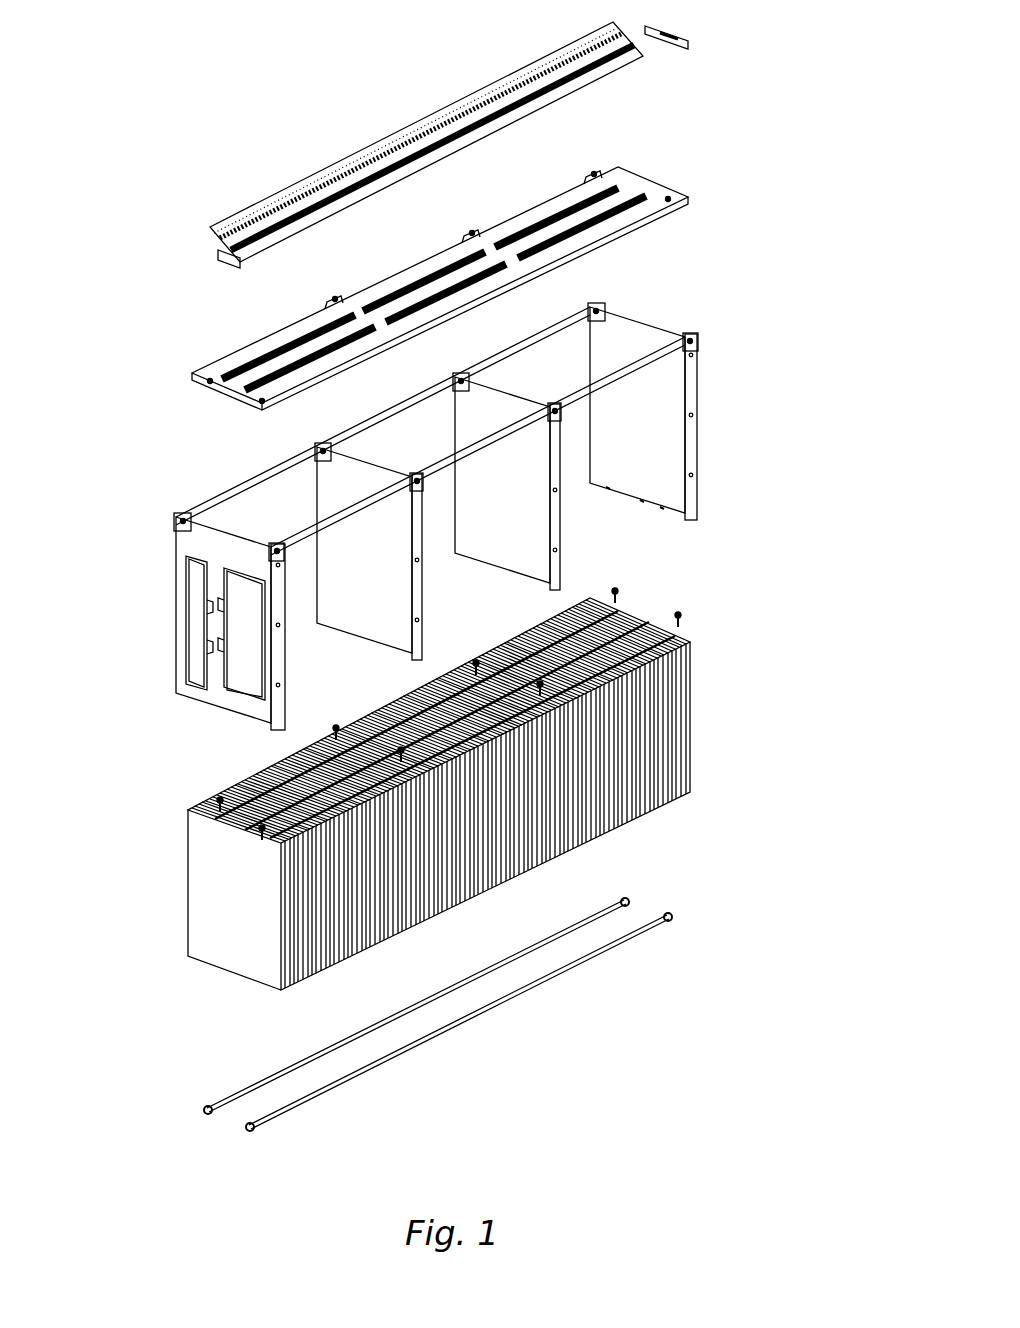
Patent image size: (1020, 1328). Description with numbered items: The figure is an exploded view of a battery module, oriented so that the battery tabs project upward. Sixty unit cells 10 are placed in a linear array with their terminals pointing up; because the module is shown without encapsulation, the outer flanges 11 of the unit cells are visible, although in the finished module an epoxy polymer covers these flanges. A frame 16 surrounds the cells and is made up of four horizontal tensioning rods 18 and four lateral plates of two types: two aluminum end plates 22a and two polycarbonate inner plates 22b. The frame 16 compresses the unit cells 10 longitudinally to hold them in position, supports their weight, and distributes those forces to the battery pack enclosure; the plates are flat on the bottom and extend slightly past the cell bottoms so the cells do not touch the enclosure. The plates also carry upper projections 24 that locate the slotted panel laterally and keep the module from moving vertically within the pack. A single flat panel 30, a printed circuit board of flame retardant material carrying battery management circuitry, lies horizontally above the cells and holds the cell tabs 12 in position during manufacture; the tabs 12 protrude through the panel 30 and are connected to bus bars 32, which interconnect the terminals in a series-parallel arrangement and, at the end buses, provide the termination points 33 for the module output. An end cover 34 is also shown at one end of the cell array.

The unit cells 10 is at (443, 778).
The outer flanges 11 is at (655, 767).
The cell tabs 12 is at (643, 615).
The frame 16 is at (443, 501).
The horizontal tensioning rods 18 is at (337, 527).
The aluminum end plates 22a is at (667, 462).
The polycarbonate inner plates 22b is at (512, 552).
The upper projections 24 is at (687, 333).
The flat panel 30 is at (658, 193).
The bus bars 32 is at (398, 140).
The termination points 33 is at (667, 33).
The end cover 34 is at (215, 892).